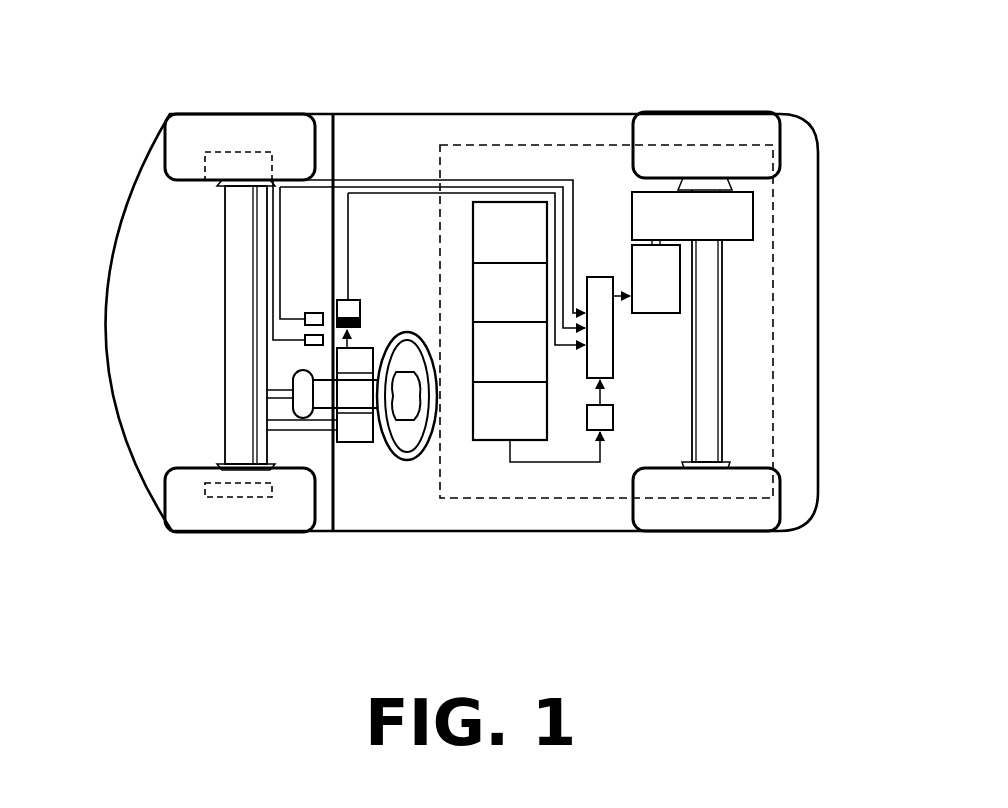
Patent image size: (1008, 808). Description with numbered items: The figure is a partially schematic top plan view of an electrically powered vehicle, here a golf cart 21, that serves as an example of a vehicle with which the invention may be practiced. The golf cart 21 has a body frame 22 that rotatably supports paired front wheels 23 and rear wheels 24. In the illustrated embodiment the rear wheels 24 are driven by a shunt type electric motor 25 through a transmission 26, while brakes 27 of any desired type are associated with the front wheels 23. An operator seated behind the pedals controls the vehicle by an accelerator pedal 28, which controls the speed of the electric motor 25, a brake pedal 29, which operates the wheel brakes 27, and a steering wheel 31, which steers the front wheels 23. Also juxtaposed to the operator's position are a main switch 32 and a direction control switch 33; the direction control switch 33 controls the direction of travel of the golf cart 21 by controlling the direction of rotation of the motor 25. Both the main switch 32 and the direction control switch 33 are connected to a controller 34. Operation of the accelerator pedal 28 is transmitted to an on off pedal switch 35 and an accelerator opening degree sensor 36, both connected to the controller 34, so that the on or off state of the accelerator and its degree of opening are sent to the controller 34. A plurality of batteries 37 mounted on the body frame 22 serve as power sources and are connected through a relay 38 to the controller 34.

The golf cart 21 is at (140, 83).
The body frame 22 is at (135, 165).
The front wheels 23 is at (253, 140).
The rear wheels 24 is at (705, 130).
The electric motor 25 is at (665, 275).
The transmission 26 is at (742, 210).
The brakes 27 is at (203, 152).
The accelerator pedal 28 is at (355, 360).
The brake pedal 29 is at (343, 440).
The steering wheel 31 is at (407, 450).
The main switch 32 is at (305, 318).
The direction control switch 33 is at (305, 340).
The controller 34 is at (605, 340).
The on off pedal switch 35 is at (362, 322).
The accelerator opening degree sensor 36 is at (351, 300).
The batteries 37 is at (497, 410).
The relay 38 is at (600, 417).